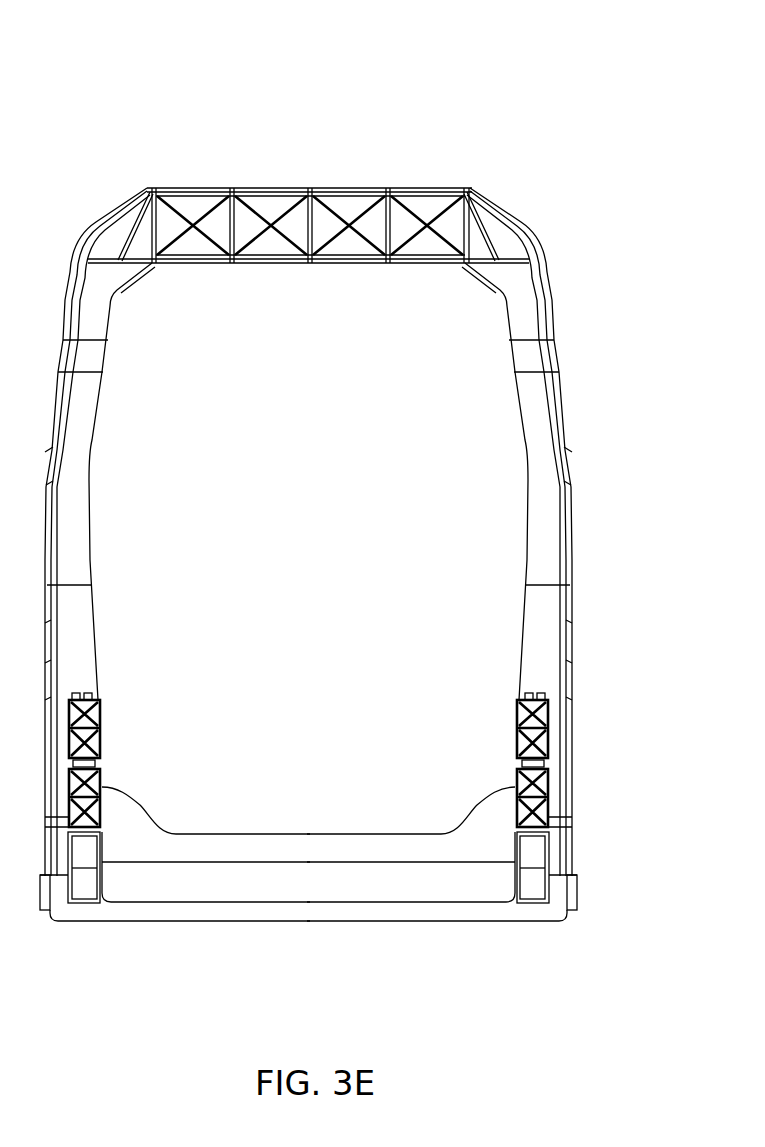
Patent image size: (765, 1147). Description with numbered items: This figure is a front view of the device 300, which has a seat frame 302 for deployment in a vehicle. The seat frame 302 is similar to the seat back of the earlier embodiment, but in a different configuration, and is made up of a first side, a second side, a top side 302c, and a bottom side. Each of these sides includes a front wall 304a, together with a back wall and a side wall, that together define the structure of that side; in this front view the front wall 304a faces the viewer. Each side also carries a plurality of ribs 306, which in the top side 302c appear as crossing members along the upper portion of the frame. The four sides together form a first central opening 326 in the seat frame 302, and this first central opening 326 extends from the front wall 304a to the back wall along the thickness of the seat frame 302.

The device 300 is at (292, 47).
The seat frame 302 is at (353, 107).
The top side 302c is at (378, 188).
The ribs 306 is at (367, 243).
The front wall 304a is at (537, 535).
The first central opening 326 is at (329, 536).